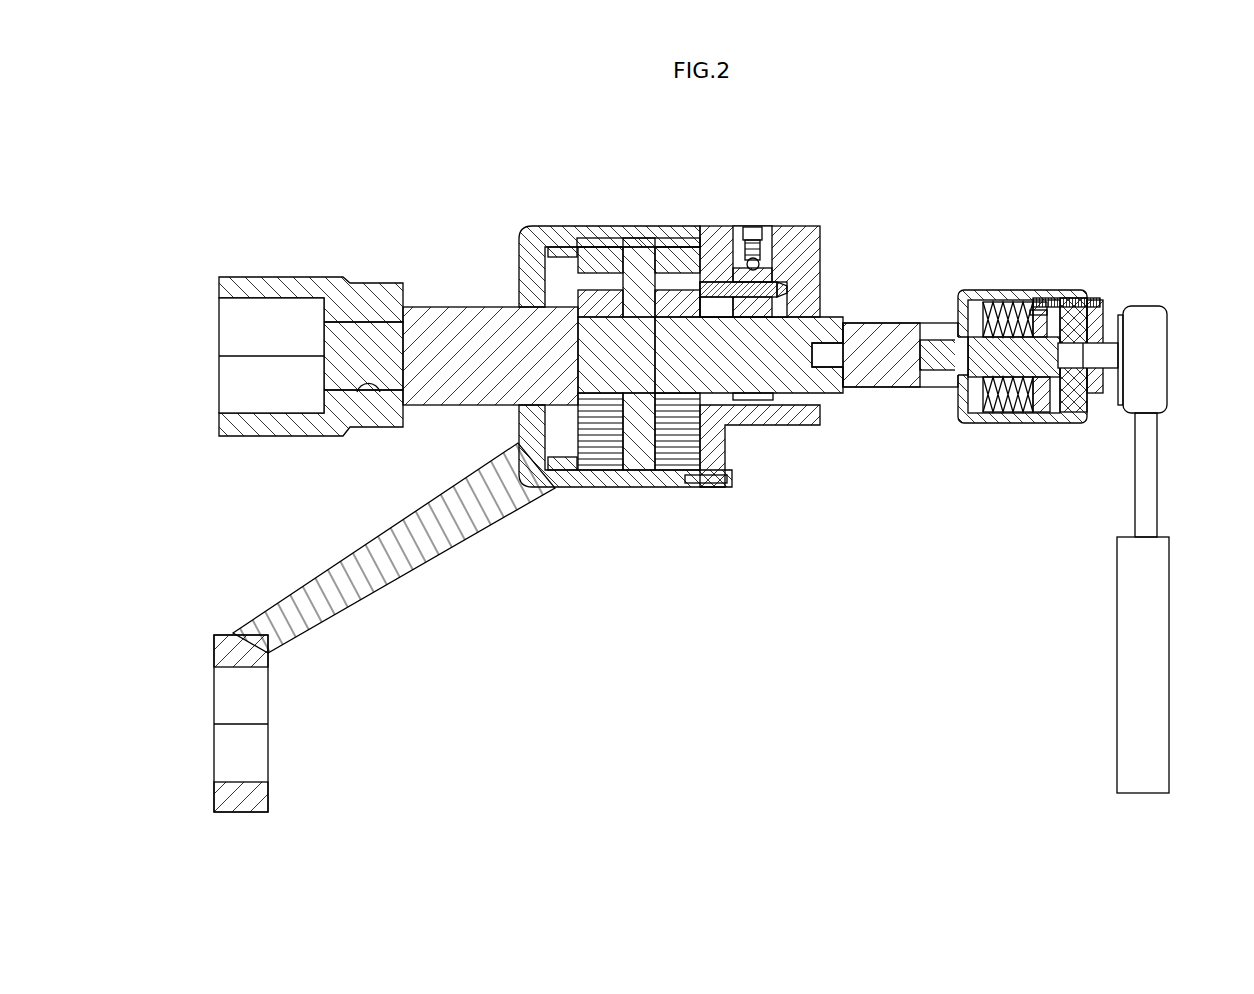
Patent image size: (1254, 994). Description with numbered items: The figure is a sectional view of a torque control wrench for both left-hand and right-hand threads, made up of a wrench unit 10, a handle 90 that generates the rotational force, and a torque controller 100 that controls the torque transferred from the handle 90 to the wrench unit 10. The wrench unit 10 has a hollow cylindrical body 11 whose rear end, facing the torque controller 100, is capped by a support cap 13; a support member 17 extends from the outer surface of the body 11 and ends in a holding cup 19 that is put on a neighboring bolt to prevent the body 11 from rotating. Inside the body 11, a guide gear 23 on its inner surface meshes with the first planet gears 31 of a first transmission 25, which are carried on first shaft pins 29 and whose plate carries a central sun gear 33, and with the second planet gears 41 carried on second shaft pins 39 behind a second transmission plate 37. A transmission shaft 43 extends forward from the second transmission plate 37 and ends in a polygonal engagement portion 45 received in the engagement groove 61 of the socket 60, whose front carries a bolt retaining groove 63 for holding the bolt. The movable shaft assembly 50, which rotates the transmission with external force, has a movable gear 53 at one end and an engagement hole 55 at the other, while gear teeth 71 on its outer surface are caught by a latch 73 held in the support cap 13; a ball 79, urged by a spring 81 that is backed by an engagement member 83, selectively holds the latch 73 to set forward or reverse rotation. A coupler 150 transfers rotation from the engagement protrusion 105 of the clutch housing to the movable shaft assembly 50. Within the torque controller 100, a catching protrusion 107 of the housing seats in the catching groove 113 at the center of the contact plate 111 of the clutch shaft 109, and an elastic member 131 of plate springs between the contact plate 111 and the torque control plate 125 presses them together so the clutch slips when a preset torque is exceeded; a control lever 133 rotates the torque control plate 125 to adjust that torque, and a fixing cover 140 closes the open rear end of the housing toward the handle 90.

The wrench unit 10 is at (718, 190).
The body 11 is at (523, 275).
The support cap 13 is at (803, 425).
The support member 17 is at (422, 563).
The holding cup 19 is at (260, 797).
The guide gear 23 is at (591, 240).
The first transmission 25 is at (640, 258).
The first shaft pins 29 is at (680, 265).
The first planet gears 31 is at (680, 455).
The sun gear 33 is at (602, 385).
The second transmission plate 37 is at (557, 250).
The second shaft pins 39 is at (600, 292).
The second planet gears 41 is at (600, 455).
The transmission shaft 43 is at (448, 317).
The engagement portion 45 is at (363, 338).
The output shaft 50 is at (773, 385).
The movable gear 53 is at (690, 460).
The engagement hole 55 is at (850, 368).
The socket 60 is at (300, 283).
The engagement groove 61 is at (380, 392).
The bolt retaining groove 63 is at (244, 342).
The gear teeth 71 is at (750, 400).
The latch 73 is at (795, 300).
The ball 79 is at (773, 302).
The spring 81 is at (762, 262).
The engagement member 83 is at (754, 229).
The handle 90 is at (1152, 508).
The torque controller 100 is at (1100, 270).
The engagement protrusion 105 is at (930, 368).
The catching protrusion 107 is at (948, 340).
The clutch shaft 109 is at (1050, 304).
The contact plate 111 is at (974, 400).
The catching groove 113 is at (950, 348).
The torque control plate 125 is at (1040, 405).
The elastic member 131 is at (1003, 315).
The control lever 133 is at (1112, 312).
The fixing cover 140 is at (1093, 395).
The coupler 150 is at (890, 330).